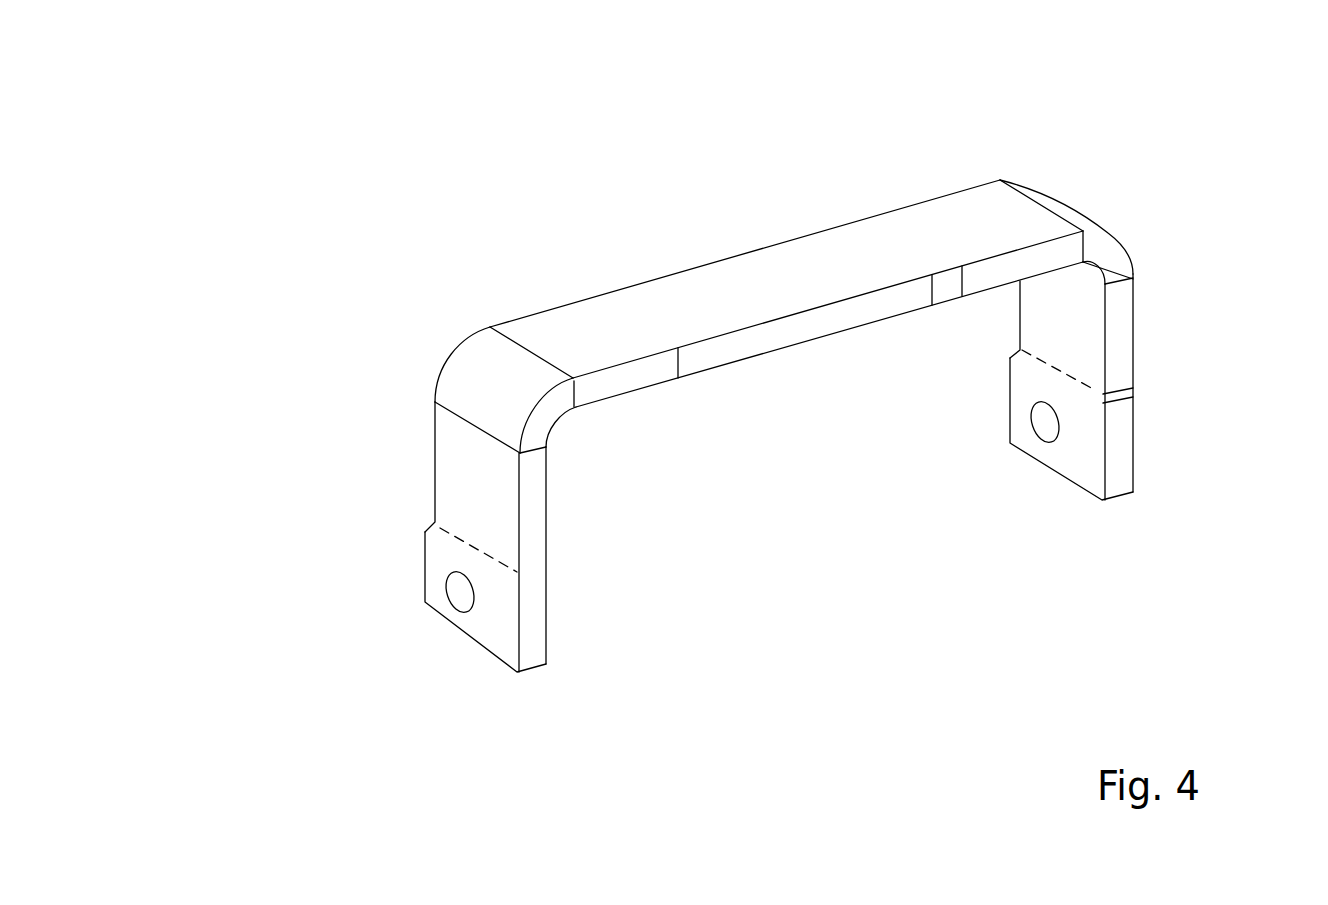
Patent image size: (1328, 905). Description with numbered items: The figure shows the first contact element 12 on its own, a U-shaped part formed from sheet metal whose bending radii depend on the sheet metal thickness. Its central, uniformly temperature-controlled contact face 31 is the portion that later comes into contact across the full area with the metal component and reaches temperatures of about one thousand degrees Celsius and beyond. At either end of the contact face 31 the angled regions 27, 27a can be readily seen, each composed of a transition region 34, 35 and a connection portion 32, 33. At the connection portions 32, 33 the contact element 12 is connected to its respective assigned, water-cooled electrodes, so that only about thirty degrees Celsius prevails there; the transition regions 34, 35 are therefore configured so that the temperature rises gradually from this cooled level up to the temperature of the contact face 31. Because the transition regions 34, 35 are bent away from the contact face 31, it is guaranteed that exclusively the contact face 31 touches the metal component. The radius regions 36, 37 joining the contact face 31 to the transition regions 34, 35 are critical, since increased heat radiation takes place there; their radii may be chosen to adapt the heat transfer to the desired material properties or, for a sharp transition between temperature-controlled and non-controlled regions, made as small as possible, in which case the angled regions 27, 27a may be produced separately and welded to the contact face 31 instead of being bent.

The first contact element 12 is at (278, 180).
The angled region 27 is at (572, 567).
The angled region 27a is at (1012, 480).
The contact face 31 is at (705, 293).
The connection portion 32 is at (437, 603).
The connection portion 33 is at (1122, 457).
The transition region 34 is at (457, 486).
The transition region 35 is at (1128, 337).
The radius region 36 is at (467, 365).
The radius region 37 is at (1108, 243).